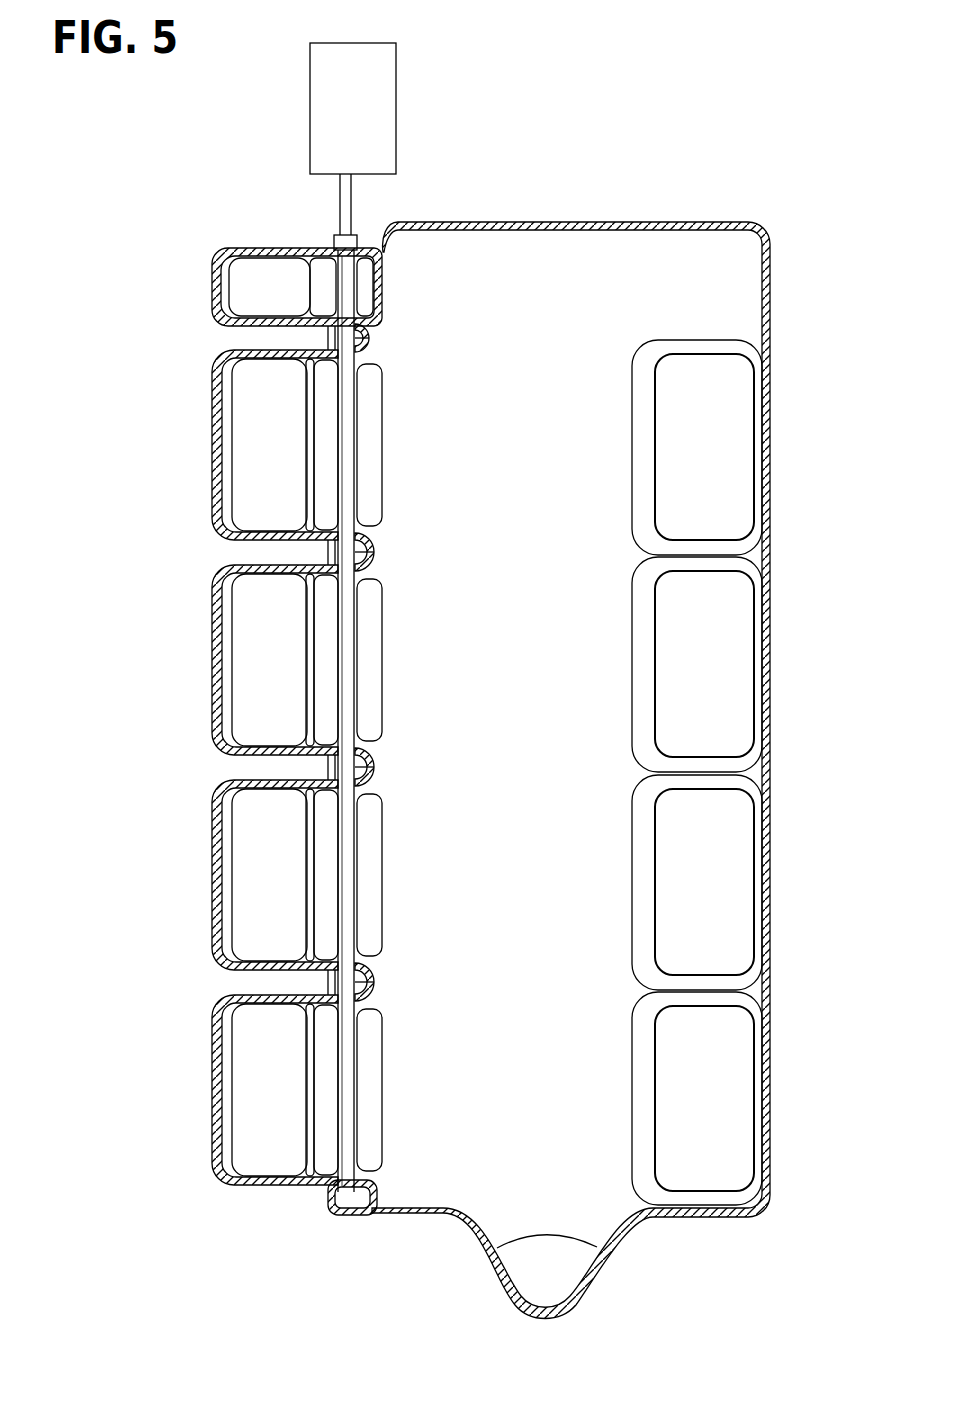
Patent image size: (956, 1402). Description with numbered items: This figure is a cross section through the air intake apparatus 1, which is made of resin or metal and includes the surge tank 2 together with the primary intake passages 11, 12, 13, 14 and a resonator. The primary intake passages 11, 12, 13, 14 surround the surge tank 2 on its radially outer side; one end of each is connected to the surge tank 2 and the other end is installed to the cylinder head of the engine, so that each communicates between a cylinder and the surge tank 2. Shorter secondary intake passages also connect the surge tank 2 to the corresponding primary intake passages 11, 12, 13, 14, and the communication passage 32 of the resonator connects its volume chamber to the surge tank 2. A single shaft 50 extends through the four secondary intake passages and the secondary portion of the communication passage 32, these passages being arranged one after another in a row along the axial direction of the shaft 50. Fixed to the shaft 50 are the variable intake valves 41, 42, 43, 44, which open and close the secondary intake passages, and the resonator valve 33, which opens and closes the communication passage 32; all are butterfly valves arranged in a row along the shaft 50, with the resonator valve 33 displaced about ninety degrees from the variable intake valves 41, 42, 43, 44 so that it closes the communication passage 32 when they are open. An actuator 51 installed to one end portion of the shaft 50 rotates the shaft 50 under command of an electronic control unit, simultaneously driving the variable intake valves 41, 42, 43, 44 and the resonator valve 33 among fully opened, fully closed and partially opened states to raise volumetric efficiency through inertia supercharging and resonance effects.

The air intake apparatus 1 is at (234, 124).
The surge tank 2 is at (552, 255).
The primary intake passage 11 is at (257, 468).
The primary intake passage 12 is at (257, 682).
The primary intake passage 13 is at (257, 891).
The primary intake passage 14 is at (257, 1122).
The communication passage 32 is at (263, 302).
The resonator valve 33 is at (322, 272).
The variable intake valve 41 is at (332, 408).
The variable intake valve 42 is at (330, 622).
The variable intake valve 43 is at (330, 828).
The variable intake valve 44 is at (330, 1058).
The shaft 50 is at (353, 193).
The actuator 51 is at (378, 100).